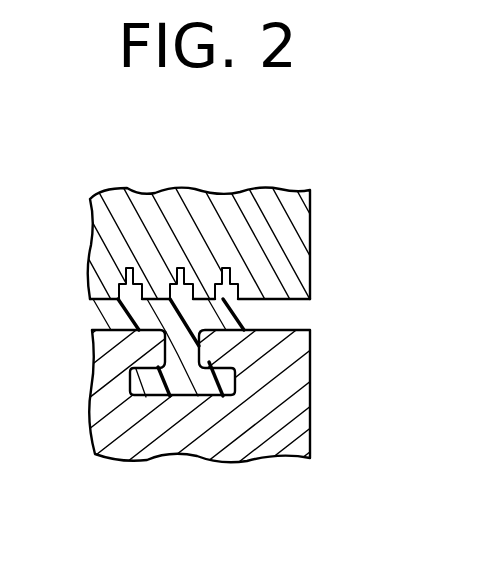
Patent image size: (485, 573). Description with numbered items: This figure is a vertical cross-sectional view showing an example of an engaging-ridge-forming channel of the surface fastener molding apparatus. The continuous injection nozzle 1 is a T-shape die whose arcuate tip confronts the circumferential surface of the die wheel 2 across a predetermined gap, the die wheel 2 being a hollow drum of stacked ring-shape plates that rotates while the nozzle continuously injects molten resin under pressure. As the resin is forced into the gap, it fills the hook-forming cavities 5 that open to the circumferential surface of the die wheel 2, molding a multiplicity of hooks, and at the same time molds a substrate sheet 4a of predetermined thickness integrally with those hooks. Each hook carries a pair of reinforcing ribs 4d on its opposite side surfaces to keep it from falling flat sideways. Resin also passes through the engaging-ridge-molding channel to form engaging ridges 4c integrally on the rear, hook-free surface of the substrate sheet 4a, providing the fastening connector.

The continuous injection nozzle 1 is at (277, 392).
The die wheel 2 is at (298, 247).
The substrate sheet 4a is at (260, 312).
The engaging ridge 4c is at (153, 383).
The reinforcing rib 4d is at (119, 297).
The hook-forming cavity 5 is at (128, 267).